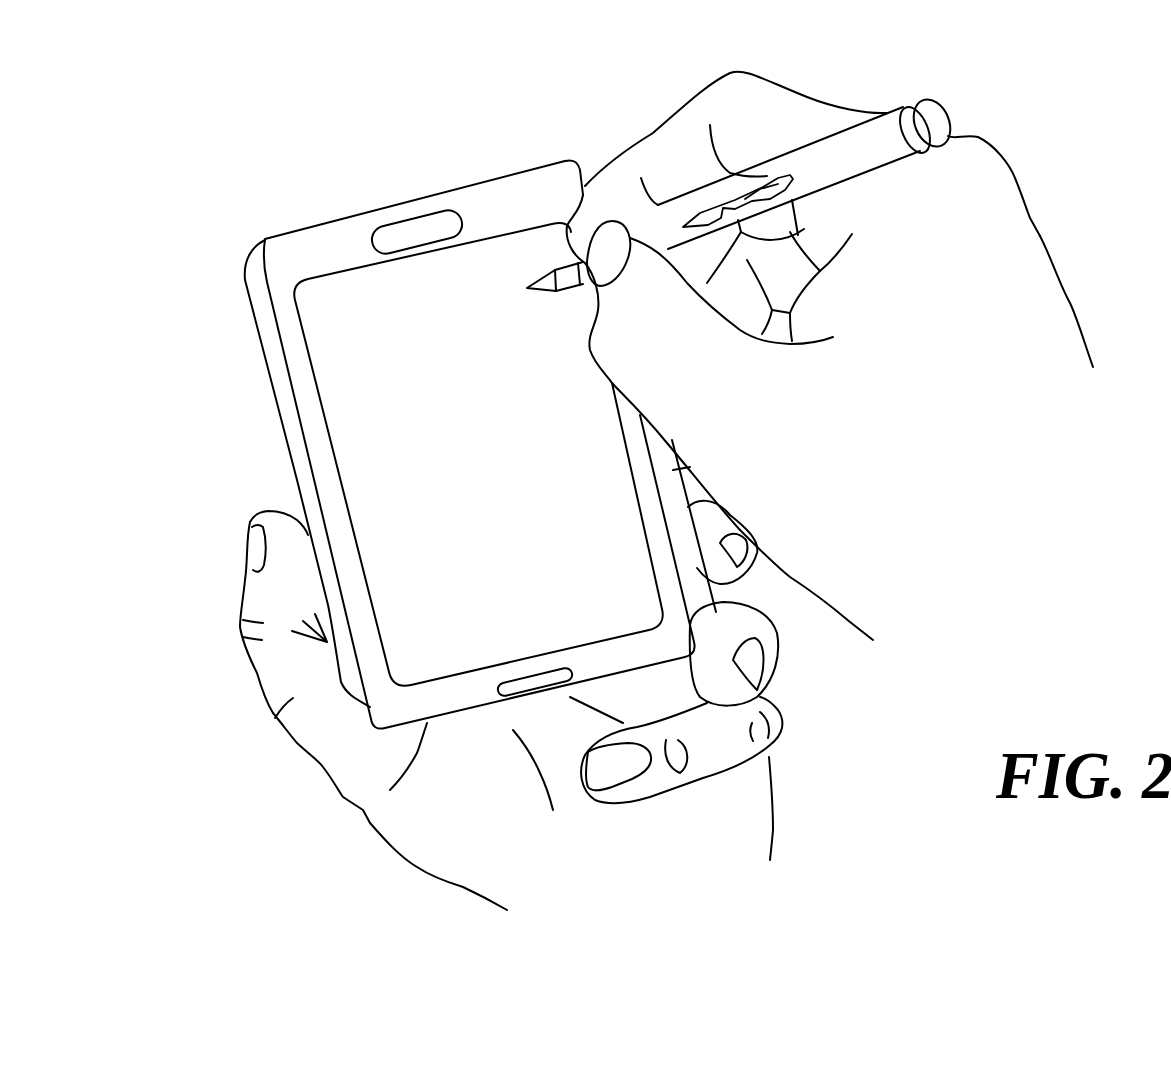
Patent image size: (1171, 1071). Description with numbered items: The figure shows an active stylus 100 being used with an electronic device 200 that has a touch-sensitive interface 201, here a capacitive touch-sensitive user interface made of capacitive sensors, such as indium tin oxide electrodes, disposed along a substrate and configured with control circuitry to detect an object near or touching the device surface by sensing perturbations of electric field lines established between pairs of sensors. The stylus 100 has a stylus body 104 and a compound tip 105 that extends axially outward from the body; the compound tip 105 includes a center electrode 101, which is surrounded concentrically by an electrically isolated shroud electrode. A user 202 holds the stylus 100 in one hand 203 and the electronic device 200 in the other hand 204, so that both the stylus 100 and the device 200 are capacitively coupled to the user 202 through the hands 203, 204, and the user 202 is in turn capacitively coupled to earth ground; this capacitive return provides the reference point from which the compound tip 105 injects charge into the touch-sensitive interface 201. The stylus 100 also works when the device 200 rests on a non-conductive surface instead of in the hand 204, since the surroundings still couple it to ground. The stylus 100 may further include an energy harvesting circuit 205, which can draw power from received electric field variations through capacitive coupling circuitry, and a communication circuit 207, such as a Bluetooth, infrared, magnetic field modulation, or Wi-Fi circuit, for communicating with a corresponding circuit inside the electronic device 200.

The stylus 100 is at (950, 113).
The center electrode 101 is at (530, 290).
The stylus body 104 is at (843, 166).
The compound tip 105 is at (511, 291).
The electronic device 200 is at (283, 267).
The touch-sensitive interface 201 is at (350, 297).
The user 202 is at (1058, 222).
The user's hand 203 is at (1062, 345).
The user's hand 204 is at (388, 815).
The energy harvesting circuit 205 is at (770, 167).
The communication circuit 207 is at (707, 197).